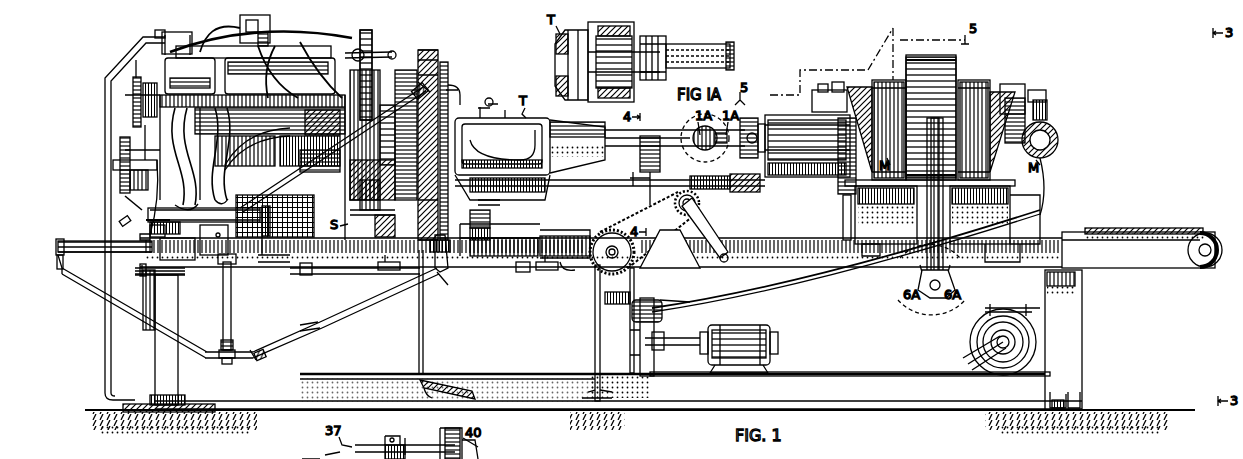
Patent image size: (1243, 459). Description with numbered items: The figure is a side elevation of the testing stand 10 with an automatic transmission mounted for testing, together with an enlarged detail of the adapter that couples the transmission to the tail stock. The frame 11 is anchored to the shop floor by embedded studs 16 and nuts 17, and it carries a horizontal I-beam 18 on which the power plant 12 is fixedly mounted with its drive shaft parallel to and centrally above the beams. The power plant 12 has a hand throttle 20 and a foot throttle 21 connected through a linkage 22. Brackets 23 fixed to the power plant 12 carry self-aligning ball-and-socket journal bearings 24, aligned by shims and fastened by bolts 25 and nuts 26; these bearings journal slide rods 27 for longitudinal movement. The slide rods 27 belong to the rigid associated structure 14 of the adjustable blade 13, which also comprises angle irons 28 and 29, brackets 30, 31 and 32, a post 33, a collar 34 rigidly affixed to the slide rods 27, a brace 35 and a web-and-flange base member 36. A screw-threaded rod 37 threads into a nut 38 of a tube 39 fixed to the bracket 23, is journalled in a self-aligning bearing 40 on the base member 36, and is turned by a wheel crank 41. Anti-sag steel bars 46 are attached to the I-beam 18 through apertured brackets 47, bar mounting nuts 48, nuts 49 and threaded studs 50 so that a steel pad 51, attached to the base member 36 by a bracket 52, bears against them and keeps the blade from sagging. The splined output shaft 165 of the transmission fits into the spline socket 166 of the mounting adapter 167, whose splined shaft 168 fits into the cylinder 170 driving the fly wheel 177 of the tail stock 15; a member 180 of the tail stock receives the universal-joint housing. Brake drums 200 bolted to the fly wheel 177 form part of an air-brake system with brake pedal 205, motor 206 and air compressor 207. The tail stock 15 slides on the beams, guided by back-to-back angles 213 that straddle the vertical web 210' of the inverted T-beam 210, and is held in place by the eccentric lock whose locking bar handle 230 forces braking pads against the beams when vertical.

In FIG. 1, the testing stand 10 is at (505, 380).
In FIG. 1, the frame 11 is at (338, 377).
In FIG. 1, the power plant 12 is at (326, 40).
In FIG. 1, the adjustable blade 13 is at (446, 64).
In FIG. 1, the associated structure 14 is at (297, 332).
In FIG. 1, the tail stock 15 is at (1000, 218).
In FIG. 1, the studs 16 is at (1054, 392).
In FIG. 1, the nuts 17 is at (1068, 392).
In FIG. 1, the horizontal I-beam 18 is at (875, 282).
In FIG. 1, the hand throttle 20 is at (387, 50).
In FIG. 1, the foot throttle 21 is at (445, 378).
In FIG. 1, the linkage 22 is at (424, 318).
In FIG. 1, the brackets 23 is at (134, 220).
In FIG. 1, the self-aligning ball-and-socket journal bearings 24 is at (135, 279).
In FIG. 1, the bolts 25 is at (136, 230).
In FIG. 1, the nuts 26 is at (138, 236).
In FIG. 1, the slide rods 27 is at (89, 260).
In FIG. 1, the angle iron 28 is at (200, 334).
In FIG. 1, the angle iron 29 is at (352, 322).
In FIG. 1, the bracket 30 is at (245, 347).
In FIG. 1, the bracket 31 is at (67, 242).
In FIG. 1, the bracket 32 is at (448, 274).
In FIG. 1, the post 33 is at (231, 297).
In FIG. 1, the collar 34 is at (210, 279).
In FIG. 1, the brace 35 is at (392, 98).
In FIG. 1, the base member 36 is at (432, 54).
In FIG. 1, the screw-threaded rod 37 is at (389, 207).
In FIG. 1, the nut 38 is at (275, 272).
In FIG. 1, the tube 39 is at (226, 204).
In FIG. 1, the self-aligning bearing 40 is at (513, 205).
In FIG. 1, the wheel crank 41 is at (498, 200).
In FIG. 1, the solid hardened steel bars 46 is at (510, 240).
In FIG. 1, the apertured brackets 47 is at (388, 278).
In FIG. 1, the bar mounting nuts 48 is at (560, 240).
In FIG. 1, the nuts 49 is at (524, 272).
In FIG. 1, the threaded studs 50 is at (568, 270).
In FIG. 1, the steel pad 51 is at (488, 230).
In FIG. 1, the bracket 52 is at (488, 216).
In FIG. 1A, the splined output shaft 165 is at (655, 44).
In FIG. 1A, the spline socket 166 is at (628, 36).
In FIG. 1A, the mounting adapter 167 is at (724, 40).
In FIG. 1A, the splined shaft 168 is at (728, 46).
In FIG. 1, the cylinder 170 is at (748, 116).
In FIG. 1, the fly wheel 177 is at (955, 74).
In FIG. 1, the member 180 is at (840, 200).
In FIG. 1, the brake drums 200 is at (886, 90).
In FIG. 1, the brake pedal 205 is at (1047, 212).
In FIG. 1, the motor 206 is at (760, 326).
In FIG. 1, the air compressor 207 is at (985, 338).
In FIG. 1, the inverted T-beam 210 is at (1142, 275).
In FIG. 1, the vertical web 210' is at (1145, 216).
In FIG. 1, the back-to-back angles 213 is at (815, 240).
In FIG. 1, the locking bar handle 230 is at (900, 205).